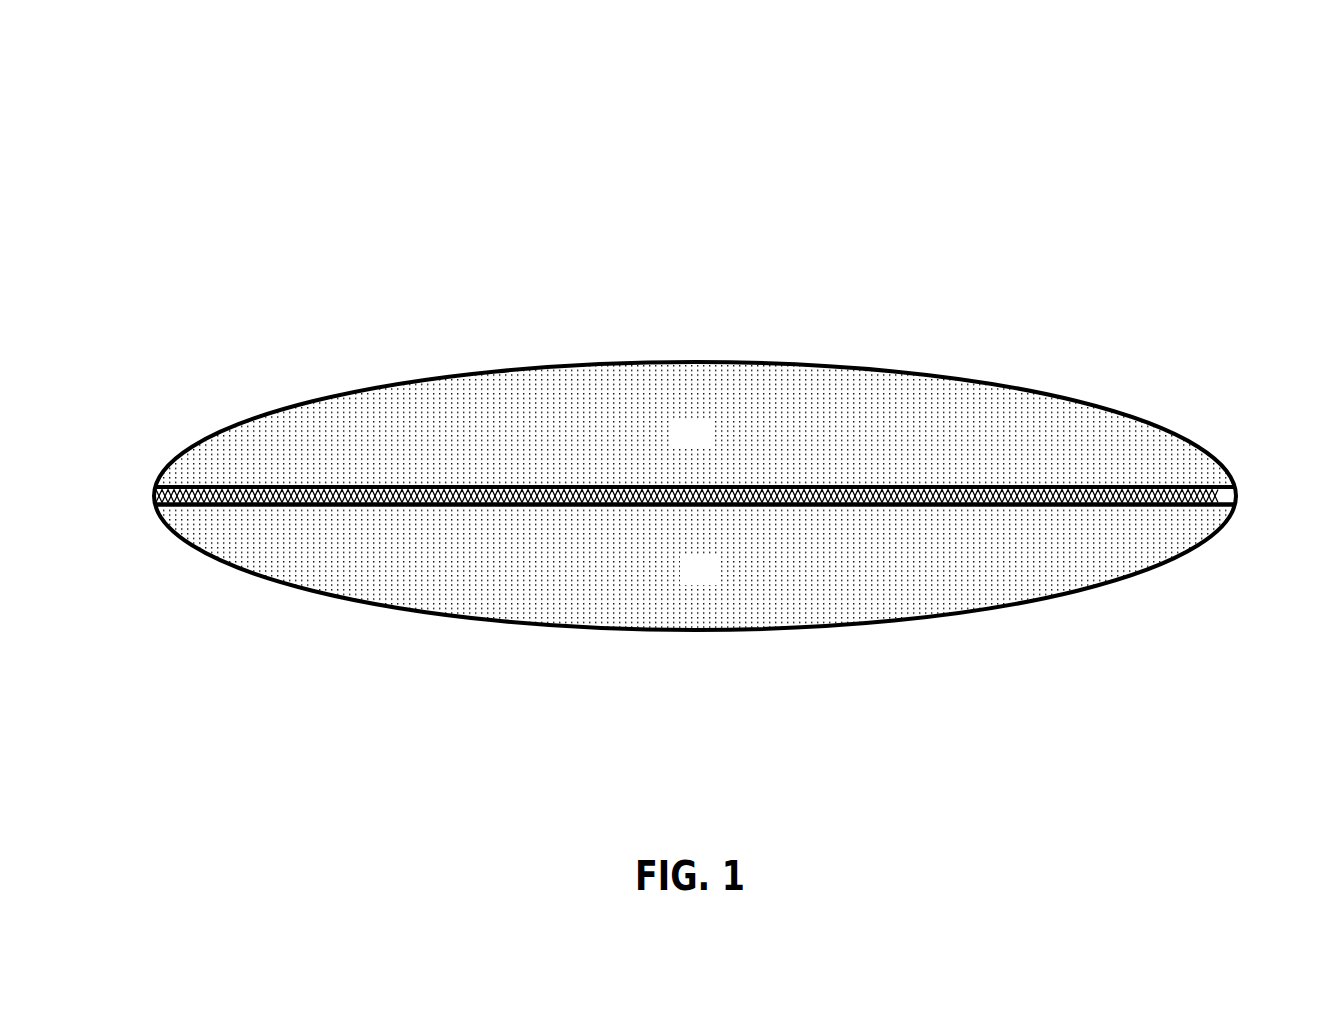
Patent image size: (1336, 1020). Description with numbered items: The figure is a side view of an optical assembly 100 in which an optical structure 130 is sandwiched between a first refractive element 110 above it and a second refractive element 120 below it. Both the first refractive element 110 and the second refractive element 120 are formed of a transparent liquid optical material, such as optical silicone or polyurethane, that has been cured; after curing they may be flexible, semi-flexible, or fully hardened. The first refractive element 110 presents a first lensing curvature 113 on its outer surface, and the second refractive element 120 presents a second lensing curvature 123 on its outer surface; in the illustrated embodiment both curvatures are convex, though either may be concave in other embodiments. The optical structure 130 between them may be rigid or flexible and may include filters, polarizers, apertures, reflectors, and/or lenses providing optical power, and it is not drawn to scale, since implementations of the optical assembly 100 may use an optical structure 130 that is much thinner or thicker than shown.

The optical assembly 100 is at (700, 378).
The first refractive element 110 is at (709, 444).
The first lensing curvature 113 is at (485, 368).
The second refractive element 120 is at (716, 580).
The second lensing curvature 123 is at (432, 618).
The optical structure 130 is at (152, 494).